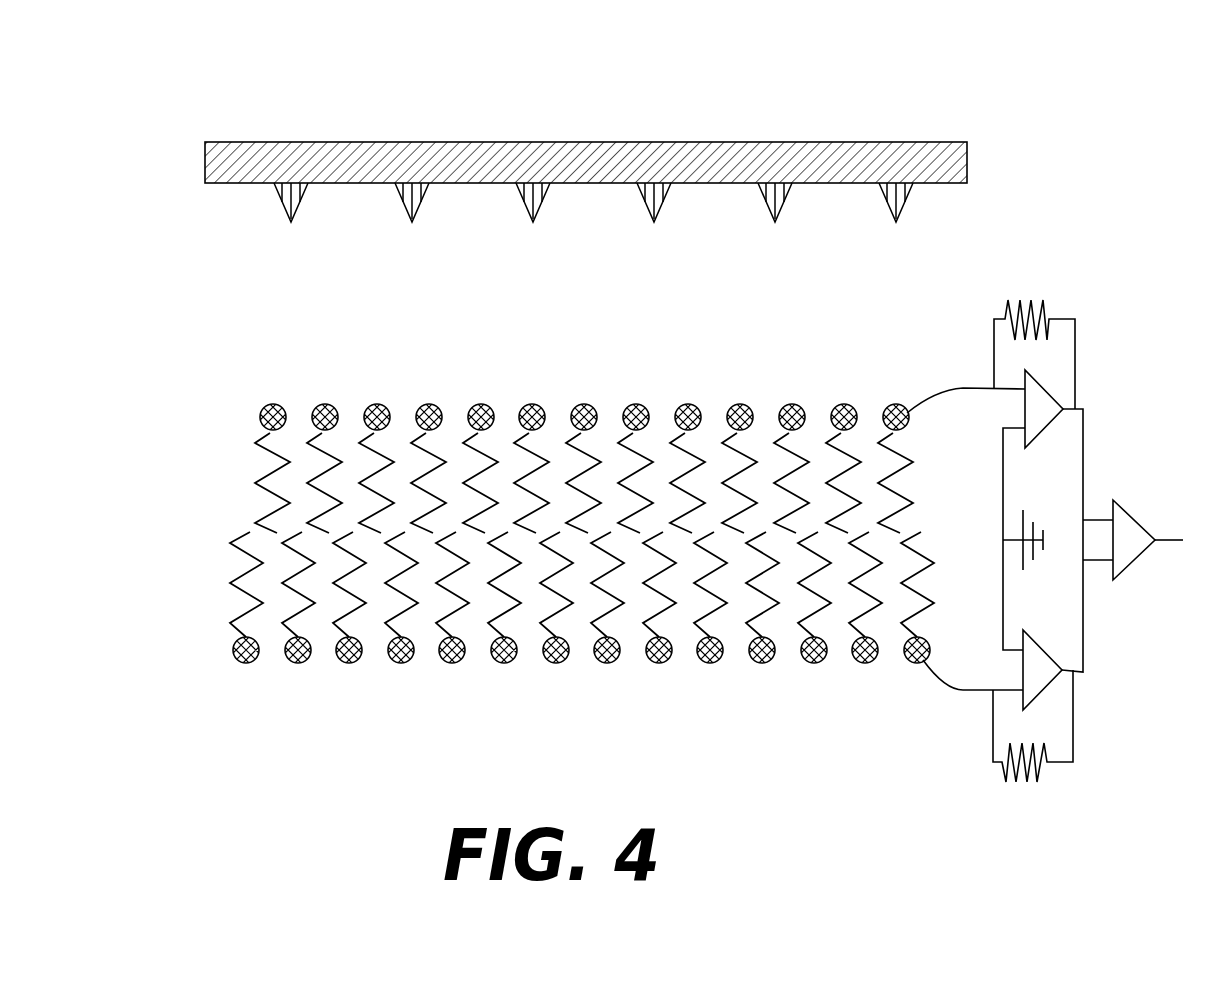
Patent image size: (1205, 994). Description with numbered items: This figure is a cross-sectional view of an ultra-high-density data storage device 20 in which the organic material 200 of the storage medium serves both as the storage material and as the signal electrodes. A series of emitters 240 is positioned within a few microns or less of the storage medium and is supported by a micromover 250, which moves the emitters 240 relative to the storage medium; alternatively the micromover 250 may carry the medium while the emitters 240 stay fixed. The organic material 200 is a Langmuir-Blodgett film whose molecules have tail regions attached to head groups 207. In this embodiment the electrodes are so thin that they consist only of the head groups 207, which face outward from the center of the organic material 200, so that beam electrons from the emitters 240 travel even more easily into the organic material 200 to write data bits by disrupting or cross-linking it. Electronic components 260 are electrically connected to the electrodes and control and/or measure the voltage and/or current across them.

The ultra-high-density data storage device 20 is at (307, 45).
The micromover 250 is at (625, 145).
The emitters 240 is at (417, 210).
The organic material 200 is at (162, 660).
The head groups 207 is at (792, 407).
The electronic components 260 is at (1150, 788).